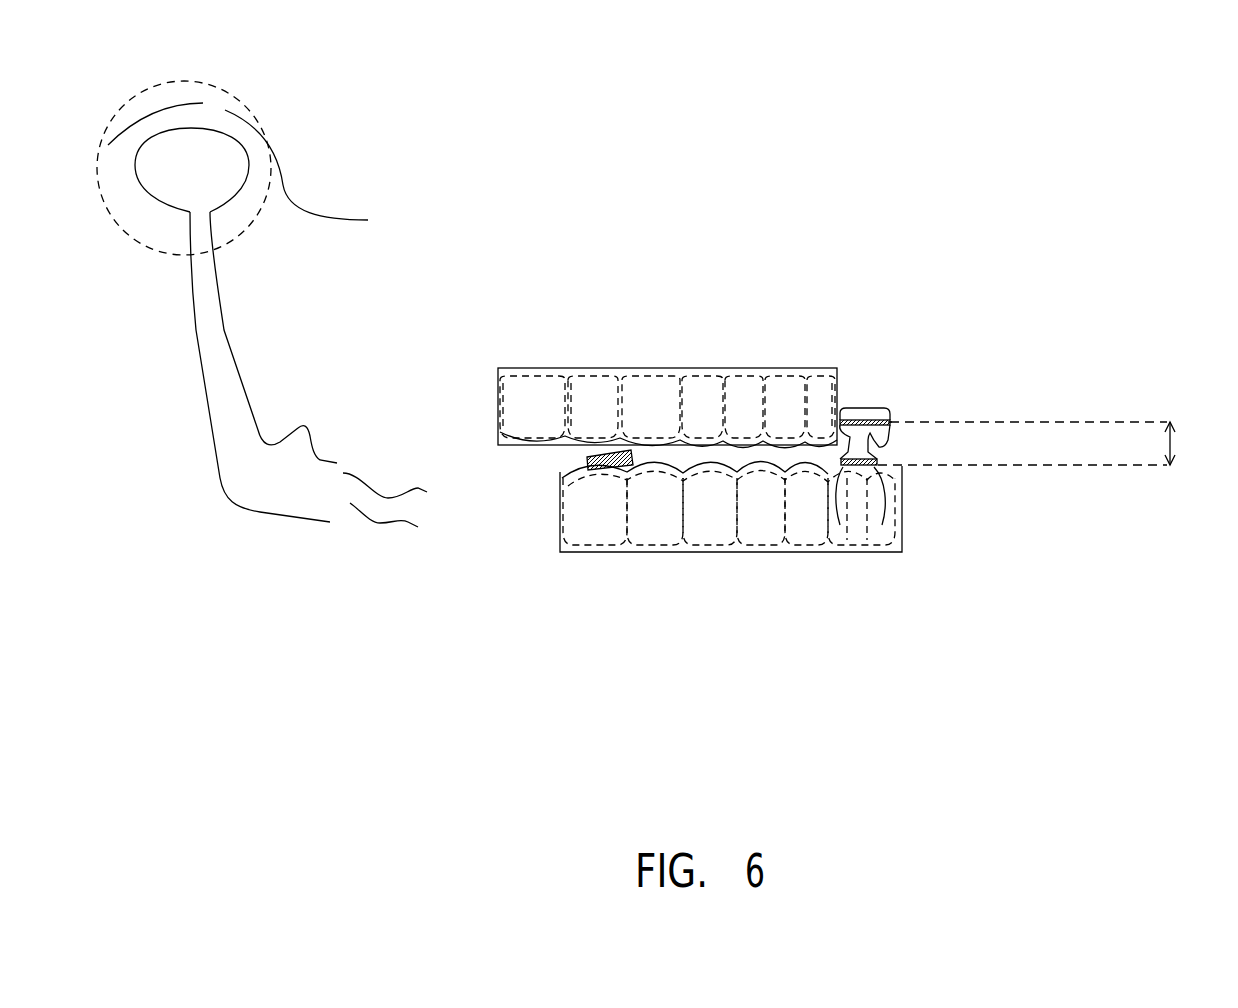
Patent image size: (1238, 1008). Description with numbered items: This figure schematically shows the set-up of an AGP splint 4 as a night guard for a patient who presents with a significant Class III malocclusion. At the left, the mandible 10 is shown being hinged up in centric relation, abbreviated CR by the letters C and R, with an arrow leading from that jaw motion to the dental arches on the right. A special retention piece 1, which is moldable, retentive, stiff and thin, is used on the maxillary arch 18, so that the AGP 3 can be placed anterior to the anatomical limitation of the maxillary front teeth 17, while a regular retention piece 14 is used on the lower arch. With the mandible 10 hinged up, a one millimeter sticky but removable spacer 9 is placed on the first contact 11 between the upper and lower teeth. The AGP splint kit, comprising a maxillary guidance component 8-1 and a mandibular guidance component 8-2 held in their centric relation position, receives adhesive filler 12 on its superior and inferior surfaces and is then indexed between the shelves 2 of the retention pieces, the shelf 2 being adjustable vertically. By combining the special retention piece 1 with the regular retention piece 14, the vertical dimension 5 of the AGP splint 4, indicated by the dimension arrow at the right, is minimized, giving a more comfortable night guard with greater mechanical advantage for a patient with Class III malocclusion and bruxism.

The mandible 10 is at (278, 492).
The centric relation C is at (208, 117).
The centric relation R is at (502, 237).
The special retention piece 1 is at (667, 385).
The maxillary arch 18 is at (525, 407).
The first contact 11 is at (617, 445).
The maxillary front teeth 17 is at (823, 395).
The regular retention piece 14 is at (787, 540).
The spacer 9 is at (607, 473).
The shelf 2 is at (867, 412).
The maxillary guidance component 8-1 is at (883, 430).
The mandibular guidance component 8-2 is at (845, 470).
The AGP 3 is at (893, 422).
The AGP splint 4 is at (890, 420).
The adhesive filler 12 is at (890, 422).
The vertical dimension 5 is at (1043, 439).